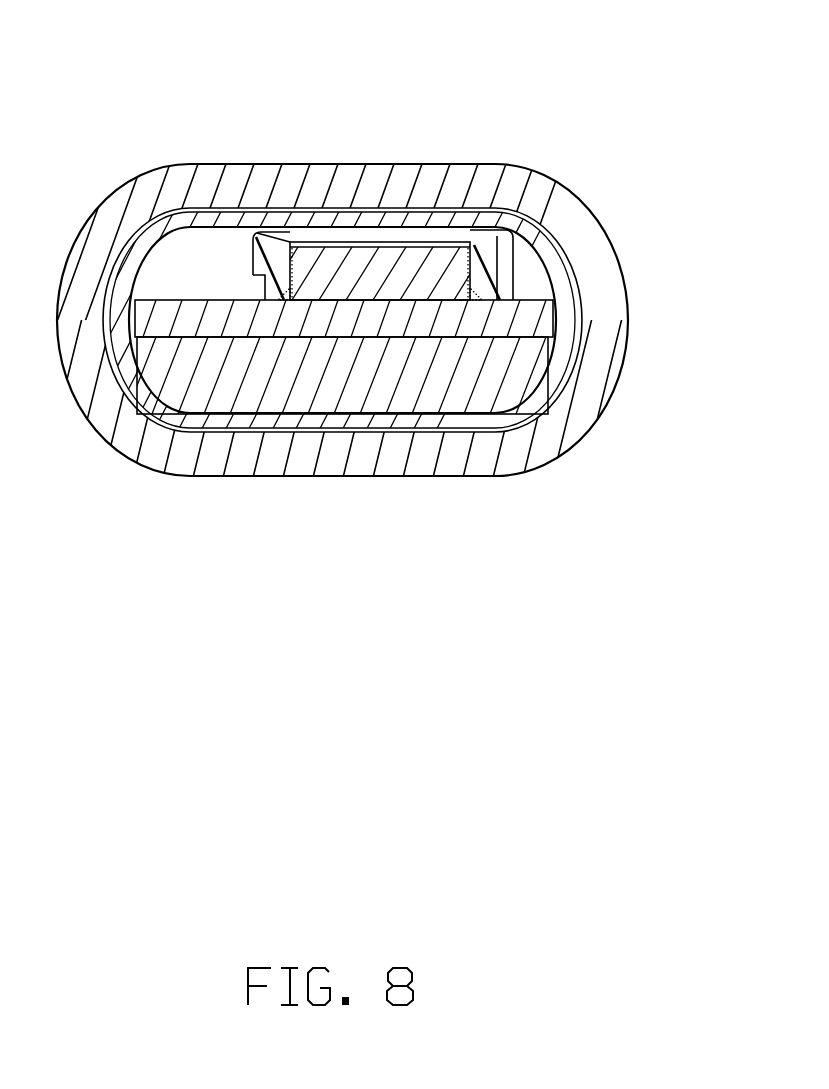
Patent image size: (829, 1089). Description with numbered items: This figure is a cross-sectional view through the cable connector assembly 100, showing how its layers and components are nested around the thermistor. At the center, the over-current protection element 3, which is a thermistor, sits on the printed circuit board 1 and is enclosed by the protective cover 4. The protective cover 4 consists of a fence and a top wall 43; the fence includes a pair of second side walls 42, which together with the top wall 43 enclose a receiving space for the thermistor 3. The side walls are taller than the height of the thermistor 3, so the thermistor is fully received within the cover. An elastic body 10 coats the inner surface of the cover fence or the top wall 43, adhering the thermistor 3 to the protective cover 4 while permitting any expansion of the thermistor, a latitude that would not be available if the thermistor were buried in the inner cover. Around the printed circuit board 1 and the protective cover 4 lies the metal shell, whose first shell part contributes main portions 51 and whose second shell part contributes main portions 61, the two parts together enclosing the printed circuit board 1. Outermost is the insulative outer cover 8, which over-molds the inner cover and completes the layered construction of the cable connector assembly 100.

The cable connector assembly 100 is at (313, 80).
The insulative outer cover 8 is at (438, 182).
The main portions 61 is at (518, 226).
The protective cover 4 is at (435, 234).
The top wall 43 is at (373, 237).
The printed circuit board 1 is at (190, 318).
The elastic body 10 is at (290, 268).
The over-current protection element 3 is at (417, 280).
The main portions 51 is at (253, 232).
The second side walls 42 is at (493, 260).